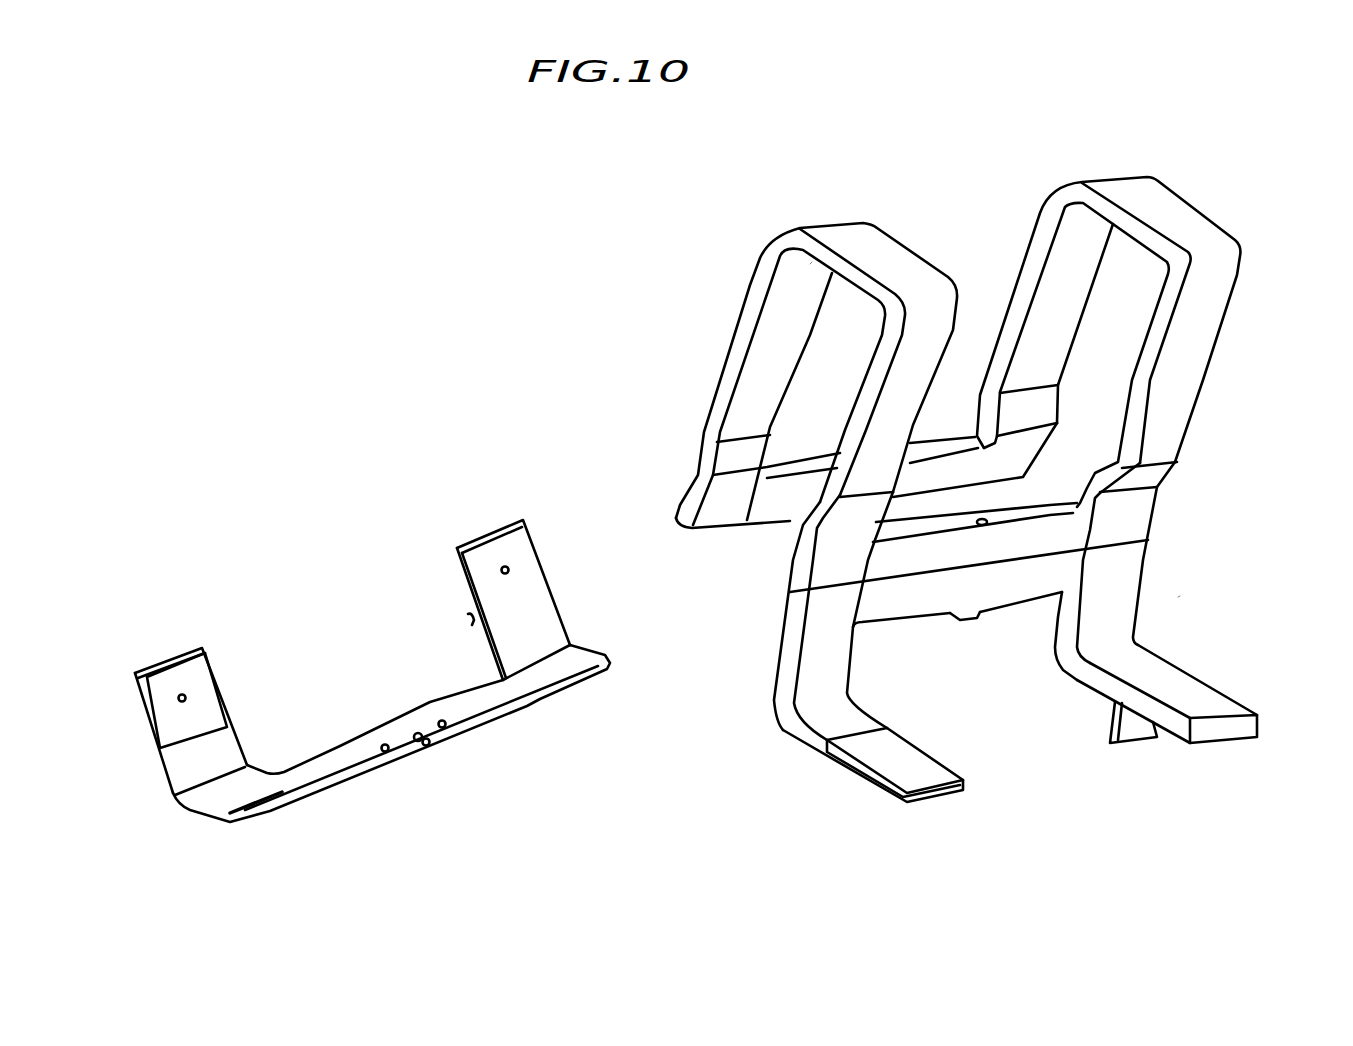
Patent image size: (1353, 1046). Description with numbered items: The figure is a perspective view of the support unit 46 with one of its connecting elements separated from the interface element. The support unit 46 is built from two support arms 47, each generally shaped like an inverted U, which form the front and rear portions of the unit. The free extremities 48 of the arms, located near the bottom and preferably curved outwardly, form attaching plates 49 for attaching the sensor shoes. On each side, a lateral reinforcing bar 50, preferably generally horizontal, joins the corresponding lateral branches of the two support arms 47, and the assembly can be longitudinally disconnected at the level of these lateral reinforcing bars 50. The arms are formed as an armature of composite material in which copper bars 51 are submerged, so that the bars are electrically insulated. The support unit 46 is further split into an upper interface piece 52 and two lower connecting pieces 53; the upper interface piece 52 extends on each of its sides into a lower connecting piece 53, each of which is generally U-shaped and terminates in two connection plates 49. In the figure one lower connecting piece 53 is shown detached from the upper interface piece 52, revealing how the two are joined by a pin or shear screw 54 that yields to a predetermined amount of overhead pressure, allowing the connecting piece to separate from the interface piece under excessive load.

The support unit 46 is at (1210, 150).
The support arm 47 is at (742, 291).
The free extremity 48 is at (760, 663).
The attaching plate 49 is at (1200, 695).
The lateral reinforcing bar 50 is at (780, 502).
The copper bar 51 is at (910, 763).
The upper interface piece 52 is at (687, 357).
The lower connecting piece 53 is at (1180, 598).
The shear screw 54 is at (416, 742).